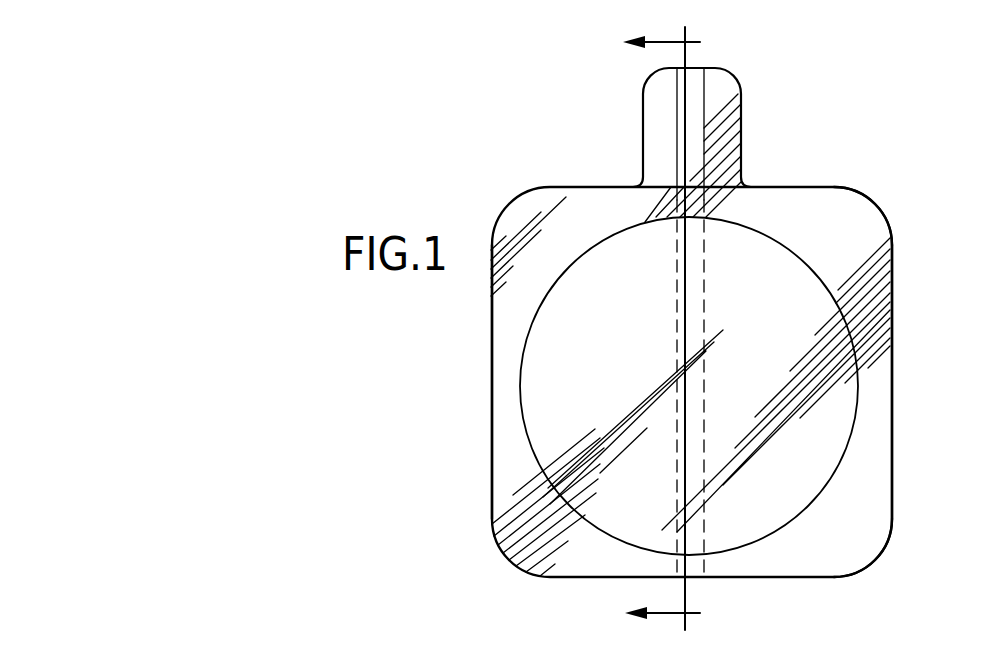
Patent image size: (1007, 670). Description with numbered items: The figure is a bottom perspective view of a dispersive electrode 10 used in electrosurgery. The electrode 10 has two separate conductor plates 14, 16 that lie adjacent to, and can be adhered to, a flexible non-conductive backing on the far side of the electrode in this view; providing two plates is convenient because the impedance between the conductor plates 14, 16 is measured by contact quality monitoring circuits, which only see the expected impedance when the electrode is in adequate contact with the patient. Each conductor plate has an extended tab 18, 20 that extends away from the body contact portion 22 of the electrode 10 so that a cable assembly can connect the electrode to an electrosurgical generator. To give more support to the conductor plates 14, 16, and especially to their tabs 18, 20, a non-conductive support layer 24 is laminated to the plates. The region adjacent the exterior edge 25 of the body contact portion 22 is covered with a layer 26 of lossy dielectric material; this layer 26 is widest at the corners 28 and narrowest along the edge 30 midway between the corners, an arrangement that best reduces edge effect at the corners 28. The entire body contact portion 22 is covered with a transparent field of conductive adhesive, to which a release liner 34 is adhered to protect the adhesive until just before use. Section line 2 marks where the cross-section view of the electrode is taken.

The dispersive electrode 10 is at (478, 123).
The conductor plate 14 is at (596, 285).
The conductor plate 16 is at (773, 270).
The extended tab 18 is at (655, 90).
The extended tab 20 is at (730, 91).
The body contact portion 22 is at (905, 283).
The non-conductive support layer 24 is at (699, 71).
The exterior edge 25 is at (893, 413).
The layer of lossy dielectric material 26 is at (863, 217).
The corners 28 is at (507, 210).
The edge 30 is at (490, 357).
The release liner 34 is at (855, 540).
The section line 2 is at (661, 329).